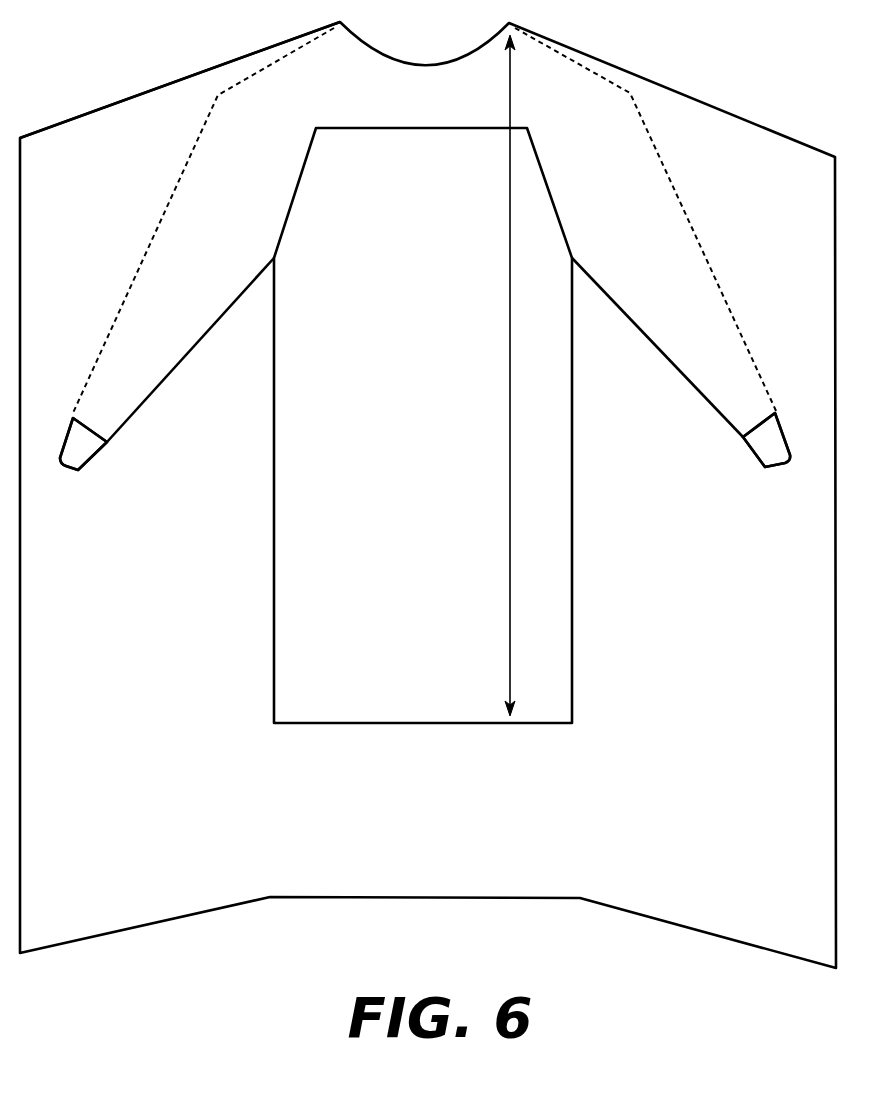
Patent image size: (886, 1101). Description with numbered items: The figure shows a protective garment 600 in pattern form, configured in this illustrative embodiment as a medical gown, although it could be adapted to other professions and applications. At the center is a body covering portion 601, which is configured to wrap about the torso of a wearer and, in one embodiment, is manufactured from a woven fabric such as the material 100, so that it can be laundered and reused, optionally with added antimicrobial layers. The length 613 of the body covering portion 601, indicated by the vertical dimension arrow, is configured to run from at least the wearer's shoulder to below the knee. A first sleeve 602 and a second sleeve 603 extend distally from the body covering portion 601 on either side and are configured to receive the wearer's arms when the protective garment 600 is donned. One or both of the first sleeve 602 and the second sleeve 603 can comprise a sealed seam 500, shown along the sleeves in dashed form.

The material 100 is at (101, 805).
The protective garment 600 is at (193, 60).
The body covering portion 601 is at (370, 415).
The first sleeve 602 is at (192, 233).
The second sleeve 603 is at (665, 222).
The sealed seam 500 is at (110, 322).
The length 613 is at (510, 583).